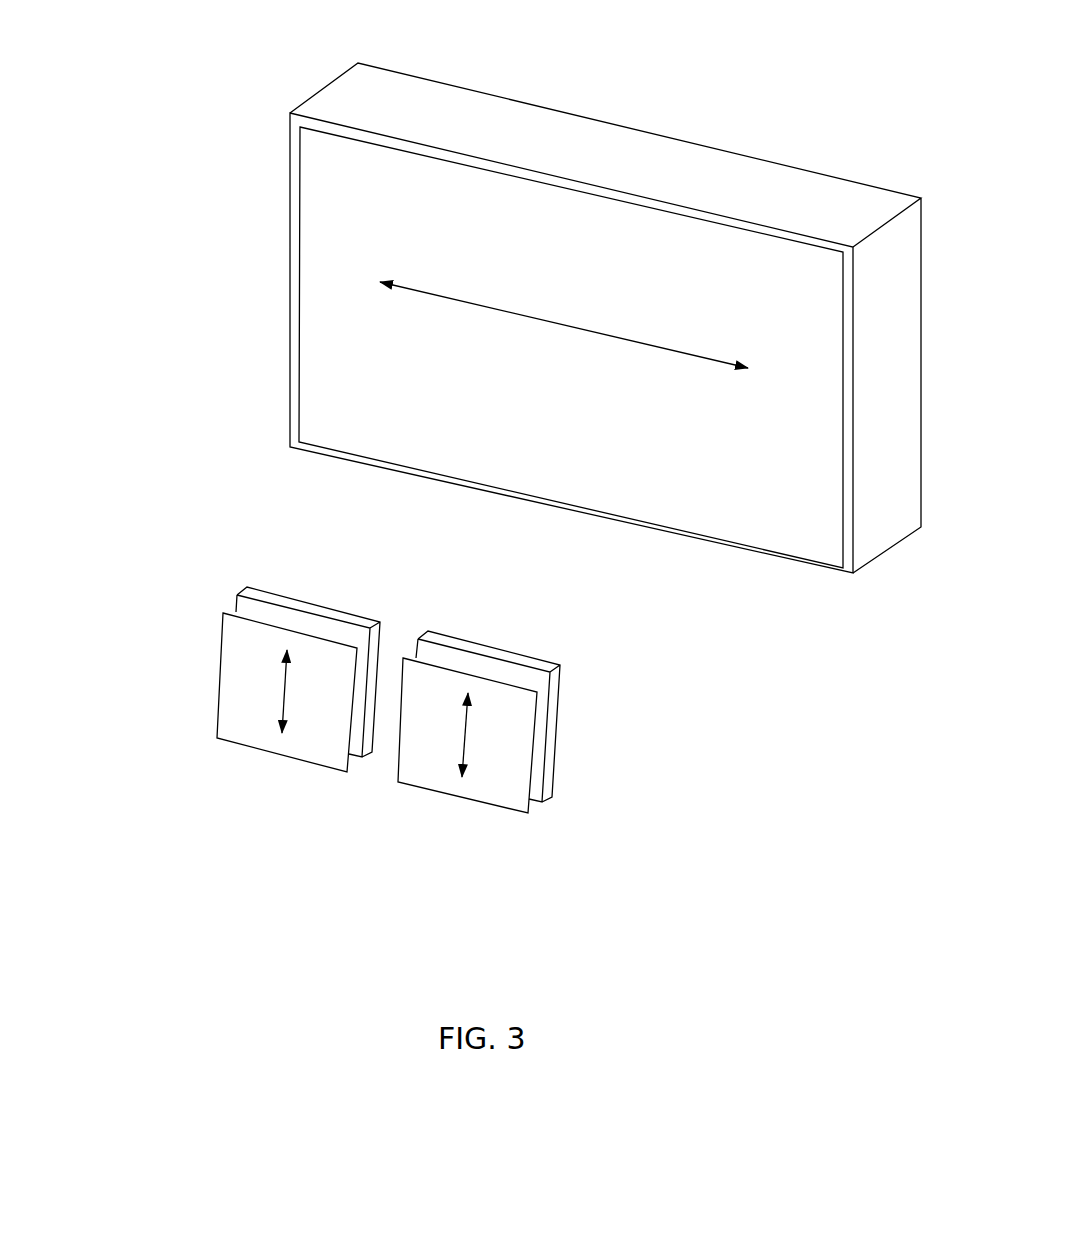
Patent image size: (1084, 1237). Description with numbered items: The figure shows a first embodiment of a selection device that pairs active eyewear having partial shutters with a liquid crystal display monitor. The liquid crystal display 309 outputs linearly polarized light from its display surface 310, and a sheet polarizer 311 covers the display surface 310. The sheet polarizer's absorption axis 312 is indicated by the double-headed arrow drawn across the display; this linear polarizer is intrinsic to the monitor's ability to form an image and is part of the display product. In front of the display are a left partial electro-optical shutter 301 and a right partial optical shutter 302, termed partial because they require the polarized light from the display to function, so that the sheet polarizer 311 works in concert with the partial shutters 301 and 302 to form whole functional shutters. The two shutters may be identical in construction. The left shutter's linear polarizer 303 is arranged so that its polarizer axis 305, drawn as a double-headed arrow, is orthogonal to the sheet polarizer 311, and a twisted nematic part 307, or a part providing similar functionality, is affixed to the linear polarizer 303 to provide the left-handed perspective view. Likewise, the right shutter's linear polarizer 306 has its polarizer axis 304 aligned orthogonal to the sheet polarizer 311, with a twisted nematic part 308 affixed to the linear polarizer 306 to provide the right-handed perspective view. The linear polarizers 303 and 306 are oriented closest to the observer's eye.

The left partial electro-optical shutter 301 is at (216, 636).
The right partial optical shutter 302 is at (554, 678).
The linear polarizer 303 is at (238, 712).
The polarizer axis 304 is at (477, 730).
The polarizer axis 305 is at (273, 681).
The linear polarizer 306 is at (417, 758).
The twisted nematic part 307 is at (270, 578).
The twisted nematic part 308 is at (448, 622).
The liquid crystal display 309 is at (575, 368).
The display surface 310 is at (813, 537).
The sheet polarizer 311 is at (556, 220).
The absorption axis 312 is at (413, 287).